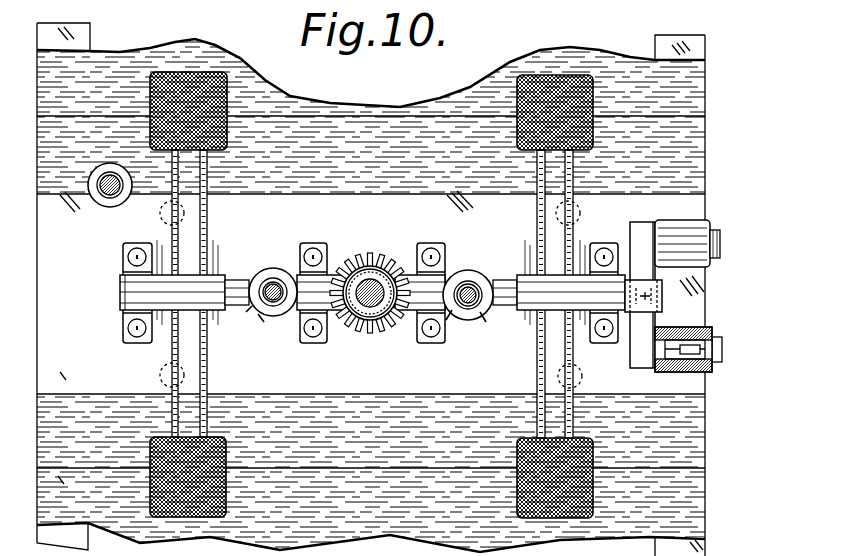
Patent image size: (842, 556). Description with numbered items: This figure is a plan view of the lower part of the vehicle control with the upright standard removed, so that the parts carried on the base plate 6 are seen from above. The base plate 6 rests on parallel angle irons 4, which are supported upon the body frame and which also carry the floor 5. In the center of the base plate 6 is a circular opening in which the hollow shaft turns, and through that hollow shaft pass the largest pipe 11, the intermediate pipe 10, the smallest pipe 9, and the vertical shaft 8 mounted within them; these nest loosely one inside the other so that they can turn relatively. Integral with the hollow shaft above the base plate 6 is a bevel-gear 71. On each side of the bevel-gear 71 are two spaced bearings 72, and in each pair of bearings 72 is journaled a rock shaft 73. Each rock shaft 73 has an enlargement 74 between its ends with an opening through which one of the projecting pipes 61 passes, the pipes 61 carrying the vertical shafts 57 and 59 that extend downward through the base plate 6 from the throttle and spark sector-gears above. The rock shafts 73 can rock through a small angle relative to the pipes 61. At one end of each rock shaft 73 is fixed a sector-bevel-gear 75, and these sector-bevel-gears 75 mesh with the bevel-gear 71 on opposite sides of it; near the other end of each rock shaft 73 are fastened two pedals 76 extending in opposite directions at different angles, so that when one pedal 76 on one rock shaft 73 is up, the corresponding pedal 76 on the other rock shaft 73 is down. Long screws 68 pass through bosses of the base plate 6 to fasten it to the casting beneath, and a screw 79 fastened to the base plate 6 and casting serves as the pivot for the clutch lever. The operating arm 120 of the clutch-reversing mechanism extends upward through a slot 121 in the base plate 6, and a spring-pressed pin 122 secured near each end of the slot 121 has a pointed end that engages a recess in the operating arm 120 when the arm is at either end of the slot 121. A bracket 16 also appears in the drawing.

The angle irons 4 is at (72, 38).
The floor 5 is at (293, 127).
The base plate 6 is at (668, 548).
The shaft 8 is at (382, 264).
The smallest pipe 9 is at (368, 268).
The pipe 10 is at (353, 318).
The largest pipe 11 is at (368, 322).
The bracket 16 is at (700, 220).
The shaft 57 is at (275, 282).
The shaft 59 is at (472, 286).
The projecting pipes 61 is at (280, 300).
The long screws 68 is at (165, 220).
The bevel-gear 71 is at (398, 268).
The bearings 72 is at (138, 290).
The rock shaft 73 is at (256, 318).
The enlargement 74 is at (262, 282).
The sector-bevel-gear 75 is at (355, 272).
The pedals 76 is at (152, 98).
The screw 79 is at (106, 205).
The operating arm 120 is at (662, 302).
The slot 121 is at (646, 372).
The spring-pressed pin 122 is at (662, 220).